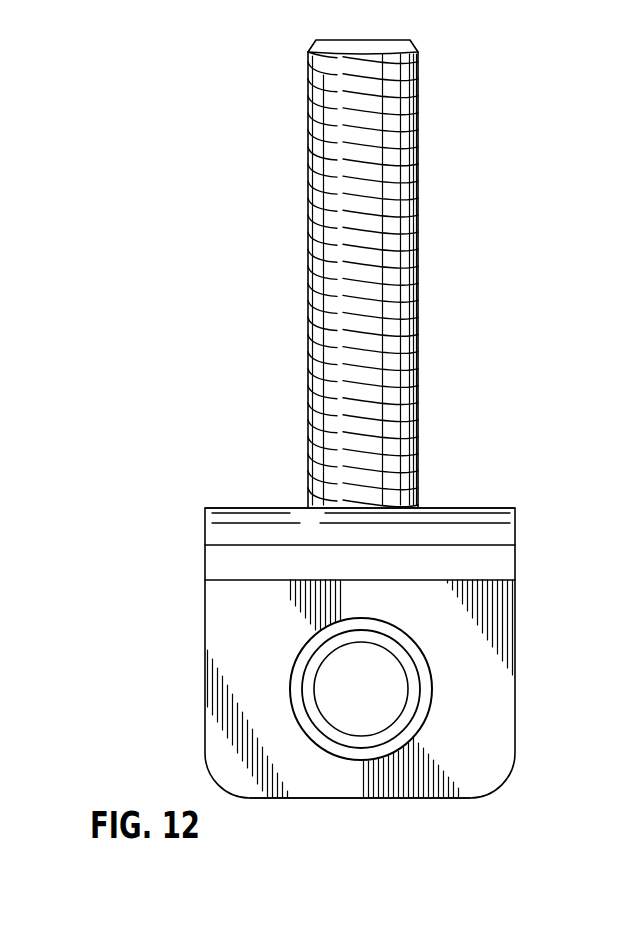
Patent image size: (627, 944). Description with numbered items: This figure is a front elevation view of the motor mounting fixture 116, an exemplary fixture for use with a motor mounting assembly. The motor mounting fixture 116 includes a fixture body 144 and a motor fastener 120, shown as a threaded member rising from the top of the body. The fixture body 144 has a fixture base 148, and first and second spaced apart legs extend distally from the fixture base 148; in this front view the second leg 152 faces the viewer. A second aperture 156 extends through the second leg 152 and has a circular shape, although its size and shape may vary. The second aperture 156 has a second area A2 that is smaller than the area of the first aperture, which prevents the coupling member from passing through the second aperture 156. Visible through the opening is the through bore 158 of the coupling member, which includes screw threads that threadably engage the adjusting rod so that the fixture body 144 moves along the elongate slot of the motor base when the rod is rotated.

The motor mounting fixture 116 is at (247, 292).
The motor fastener 120 is at (412, 135).
The fixture body 144 is at (224, 506).
The fixture base 148 is at (478, 507).
The second leg 152 is at (440, 800).
The second aperture 156 is at (342, 621).
The second area A2 is at (382, 620).
The through bore 158 is at (361, 689).